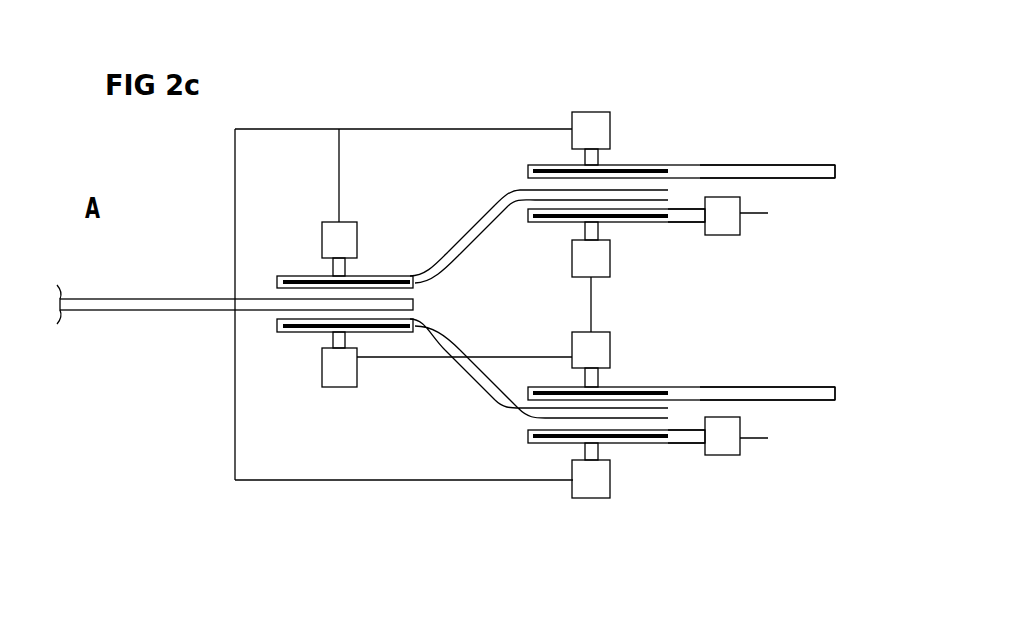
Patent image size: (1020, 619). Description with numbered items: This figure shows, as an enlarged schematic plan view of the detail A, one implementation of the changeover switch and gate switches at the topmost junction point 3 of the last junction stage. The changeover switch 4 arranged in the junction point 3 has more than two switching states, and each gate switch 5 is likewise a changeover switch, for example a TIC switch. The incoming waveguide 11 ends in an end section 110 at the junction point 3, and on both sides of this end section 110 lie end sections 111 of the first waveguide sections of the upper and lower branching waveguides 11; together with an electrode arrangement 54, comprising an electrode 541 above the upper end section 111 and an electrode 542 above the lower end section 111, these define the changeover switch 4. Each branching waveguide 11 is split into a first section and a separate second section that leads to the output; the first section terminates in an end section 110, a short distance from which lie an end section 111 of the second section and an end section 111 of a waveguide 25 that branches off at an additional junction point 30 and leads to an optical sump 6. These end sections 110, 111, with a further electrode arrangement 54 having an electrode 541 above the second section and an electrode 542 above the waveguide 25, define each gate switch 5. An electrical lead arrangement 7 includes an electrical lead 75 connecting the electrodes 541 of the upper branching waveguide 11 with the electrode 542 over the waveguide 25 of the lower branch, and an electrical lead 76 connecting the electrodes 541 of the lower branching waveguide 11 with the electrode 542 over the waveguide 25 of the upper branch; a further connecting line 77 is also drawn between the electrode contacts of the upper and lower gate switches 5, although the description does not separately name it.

The junction point 3 is at (543, 325).
The changeover switch 4 is at (368, 258).
The gate switch 5 is at (598, 300).
The optical sump 6 is at (746, 330).
The electrical lead arrangement 7 is at (404, 351).
The branching waveguide 11 is at (160, 311).
The waveguide 25 is at (690, 223).
The additional junction point 30 is at (607, 100).
The electrode arrangement 54 is at (312, 334).
The electrical lead 75 is at (291, 481).
The electrical lead 76 is at (515, 357).
The connecting line 77 is at (592, 310).
The end section 110 is at (280, 299).
The end section 111 is at (397, 276).
The electrode 541 is at (305, 276).
The electrode 542 is at (297, 332).